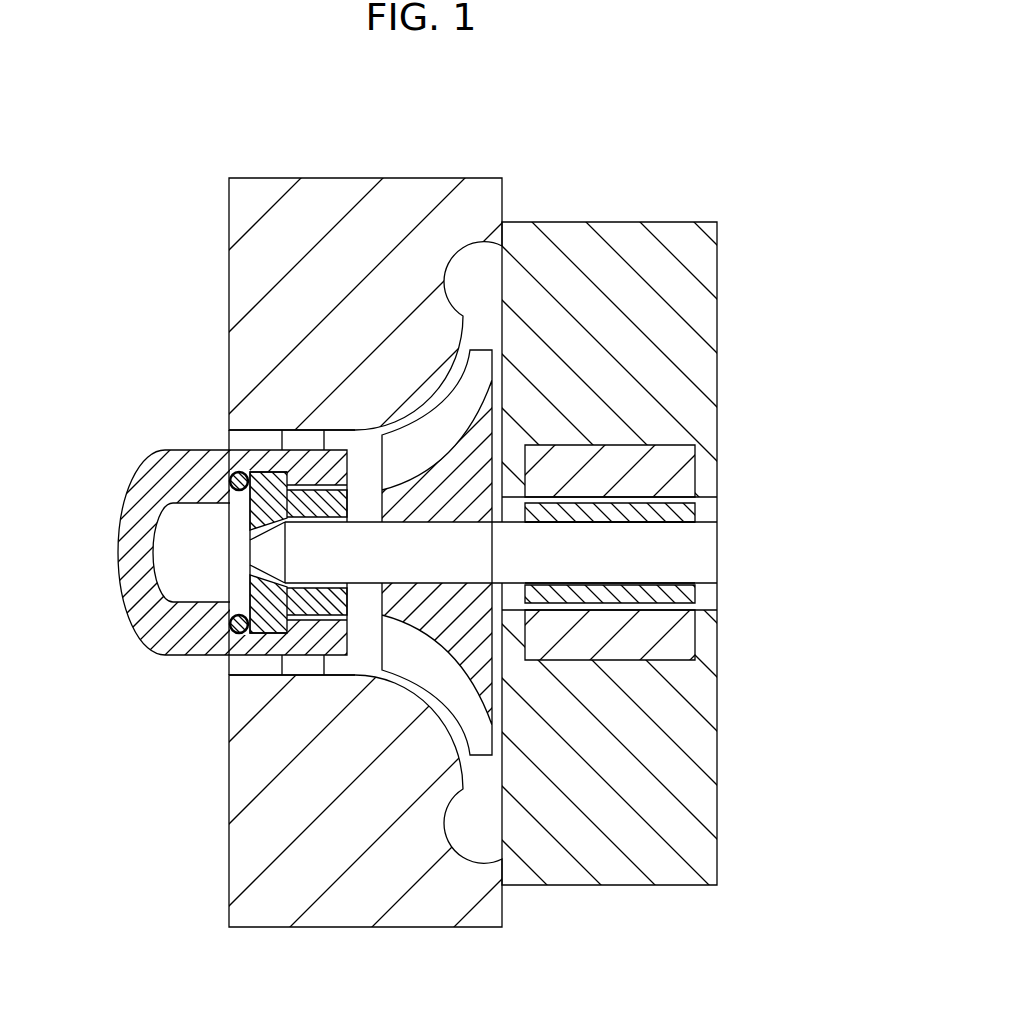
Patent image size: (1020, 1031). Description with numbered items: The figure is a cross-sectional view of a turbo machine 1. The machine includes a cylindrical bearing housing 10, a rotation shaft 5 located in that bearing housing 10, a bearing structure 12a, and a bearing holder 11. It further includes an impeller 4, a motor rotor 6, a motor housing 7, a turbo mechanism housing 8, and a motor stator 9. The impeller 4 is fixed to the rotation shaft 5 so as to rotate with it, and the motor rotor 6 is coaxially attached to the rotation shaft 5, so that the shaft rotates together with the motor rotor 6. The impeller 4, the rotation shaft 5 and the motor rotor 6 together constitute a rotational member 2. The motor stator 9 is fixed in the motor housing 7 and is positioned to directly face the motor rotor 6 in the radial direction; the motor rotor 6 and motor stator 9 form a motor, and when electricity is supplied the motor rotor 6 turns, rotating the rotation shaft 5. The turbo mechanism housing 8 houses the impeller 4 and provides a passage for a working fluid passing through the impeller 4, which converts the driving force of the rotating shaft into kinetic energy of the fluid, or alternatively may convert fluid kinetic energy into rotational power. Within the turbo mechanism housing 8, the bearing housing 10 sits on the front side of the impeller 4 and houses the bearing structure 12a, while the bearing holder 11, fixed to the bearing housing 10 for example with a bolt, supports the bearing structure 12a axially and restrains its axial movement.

The turbo machine 1 is at (693, 98).
The rotational member 2 is at (734, 561).
The impeller 4 is at (430, 668).
The rotation shaft 5 is at (572, 560).
The motor rotor 6 is at (615, 592).
The motor housing 7 is at (613, 252).
The turbo mechanism housing 8 is at (323, 218).
The motor stator 9 is at (648, 633).
The bearing housing 10 is at (303, 640).
The bearing holder 11 is at (143, 482).
The bearing structure 12a is at (243, 592).